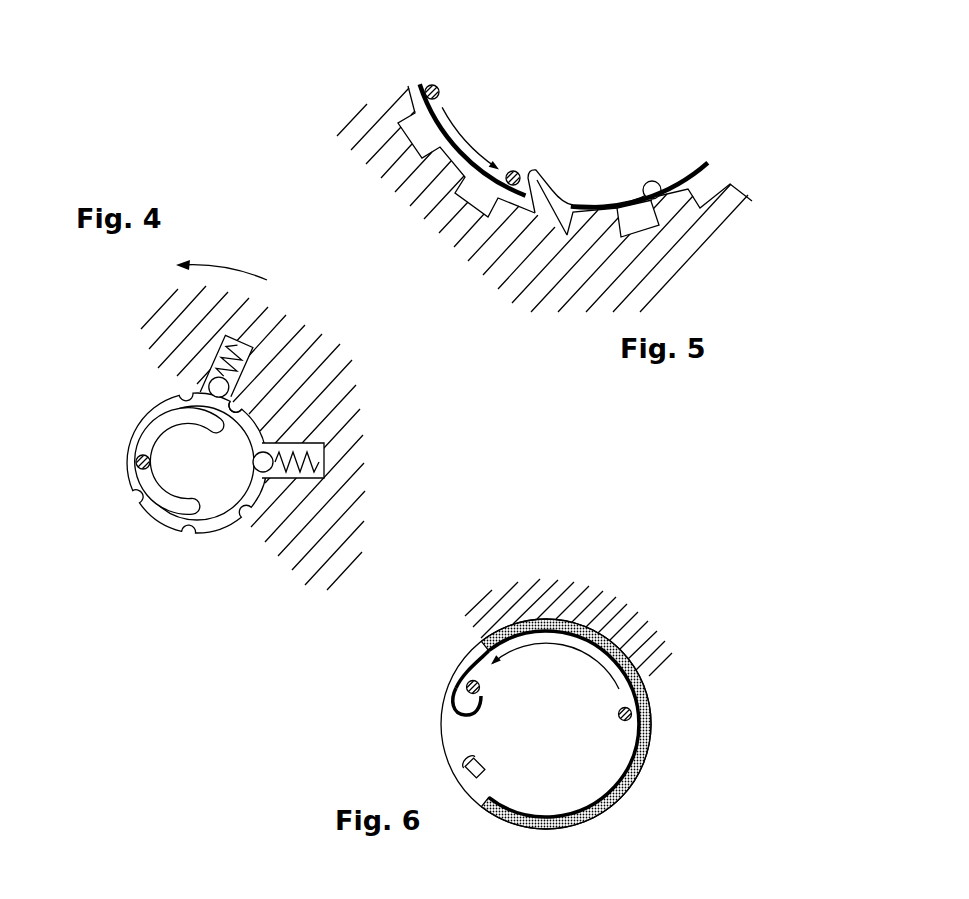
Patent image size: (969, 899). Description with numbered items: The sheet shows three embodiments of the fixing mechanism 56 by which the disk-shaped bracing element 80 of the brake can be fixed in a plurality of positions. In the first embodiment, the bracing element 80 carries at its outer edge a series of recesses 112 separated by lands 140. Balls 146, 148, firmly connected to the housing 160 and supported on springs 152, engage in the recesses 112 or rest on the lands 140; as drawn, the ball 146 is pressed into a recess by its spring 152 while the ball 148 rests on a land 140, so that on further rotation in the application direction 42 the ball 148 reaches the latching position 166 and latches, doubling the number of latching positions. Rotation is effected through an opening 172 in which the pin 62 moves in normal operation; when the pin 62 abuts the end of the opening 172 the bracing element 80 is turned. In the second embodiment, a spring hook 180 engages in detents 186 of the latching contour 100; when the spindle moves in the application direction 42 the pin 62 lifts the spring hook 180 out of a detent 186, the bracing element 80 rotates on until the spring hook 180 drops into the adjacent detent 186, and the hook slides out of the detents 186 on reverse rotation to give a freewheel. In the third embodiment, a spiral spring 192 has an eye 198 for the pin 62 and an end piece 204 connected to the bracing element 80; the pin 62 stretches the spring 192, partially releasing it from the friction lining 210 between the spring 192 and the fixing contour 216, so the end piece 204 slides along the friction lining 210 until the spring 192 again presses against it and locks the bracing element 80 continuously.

In FIG. 4, the application direction 42 is at (233, 270).
In FIG. 5, the application direction 42 is at (463, 130).
In FIG. 6, the application direction 42 is at (543, 645).
In FIG. 5, the fixing mechanism 56 is at (568, 182).
In FIG. 6, the fixing mechanism 56 is at (646, 613).
In FIG. 4, the pin 62 is at (137, 463).
In FIG. 5, the pin 62 is at (440, 90).
In FIG. 6, the pin 62 is at (468, 682).
In FIG. 4, the bracing element 80 is at (152, 502).
In FIG. 5, the bracing element 80 is at (666, 77).
In FIG. 5, the latching contour 100 is at (395, 150).
In FIG. 4, the recess 112 is at (140, 413).
In FIG. 4, the land 140 is at (152, 456).
In FIG. 4, the ball 146 is at (262, 474).
In FIG. 4, the ball 148 is at (200, 392).
In FIG. 4, the spring 152 is at (248, 336).
In FIG. 4, the housing 160 is at (305, 366).
In FIG. 4, the latching position 166 is at (250, 398).
In FIG. 4, the opening 172 is at (150, 487).
In FIG. 5, the spring hook 180 is at (625, 200).
In FIG. 5, the detent 186 is at (641, 220).
In FIG. 6, the spring 192 is at (473, 667).
In FIG. 6, the eye 198 is at (456, 721).
In FIG. 6, the end piece 204 is at (500, 762).
In FIG. 6, the friction lining 210 is at (648, 688).
In FIG. 6, the fixing contour 216 is at (589, 592).